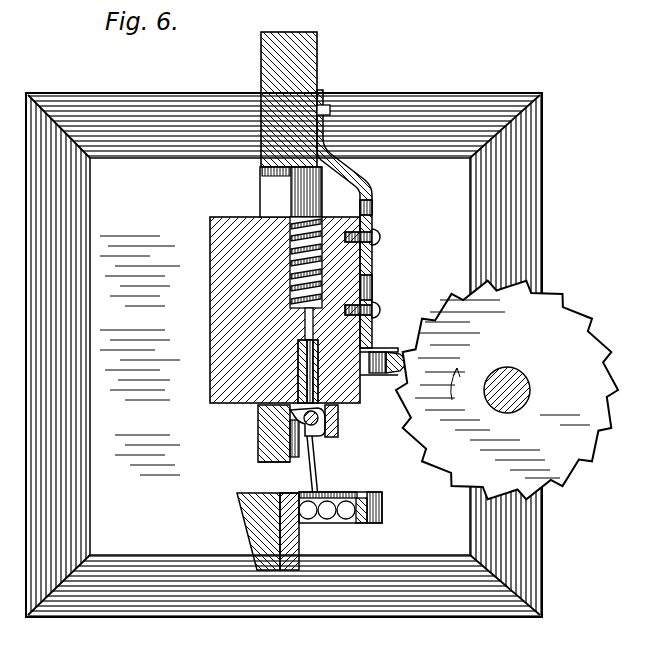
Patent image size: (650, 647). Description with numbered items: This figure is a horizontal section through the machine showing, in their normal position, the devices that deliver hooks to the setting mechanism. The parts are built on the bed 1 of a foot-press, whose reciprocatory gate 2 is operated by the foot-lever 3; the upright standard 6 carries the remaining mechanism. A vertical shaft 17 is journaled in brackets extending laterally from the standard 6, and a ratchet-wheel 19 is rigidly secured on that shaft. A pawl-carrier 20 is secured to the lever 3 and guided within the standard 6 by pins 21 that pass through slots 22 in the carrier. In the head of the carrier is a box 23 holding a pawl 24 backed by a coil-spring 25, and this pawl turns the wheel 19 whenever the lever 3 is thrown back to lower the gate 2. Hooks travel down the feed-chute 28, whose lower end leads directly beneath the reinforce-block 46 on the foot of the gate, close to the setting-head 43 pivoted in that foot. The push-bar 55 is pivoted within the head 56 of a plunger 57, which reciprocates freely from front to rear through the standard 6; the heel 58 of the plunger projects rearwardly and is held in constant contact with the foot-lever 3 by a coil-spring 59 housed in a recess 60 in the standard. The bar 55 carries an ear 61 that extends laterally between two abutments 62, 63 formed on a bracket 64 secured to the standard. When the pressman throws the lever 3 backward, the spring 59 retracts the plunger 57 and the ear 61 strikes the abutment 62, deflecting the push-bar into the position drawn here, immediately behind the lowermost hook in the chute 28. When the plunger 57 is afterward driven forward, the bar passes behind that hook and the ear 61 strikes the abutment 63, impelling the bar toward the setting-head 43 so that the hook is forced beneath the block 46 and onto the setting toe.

The bed 1 is at (205, 418).
The reciprocatory gate 2 is at (246, 506).
The foot-lever 3 is at (292, 82).
The standard 6 is at (214, 318).
The vertical shaft 17 is at (531, 388).
The ratchet-wheel 19 is at (507, 390).
The pawl-carrier 20 is at (373, 268).
The pins 21 is at (381, 237).
The slots 22 is at (373, 207).
The box 23 is at (378, 352).
The pawl 24 is at (390, 373).
The coil-spring 25 is at (372, 378).
The feed-chute 28 is at (383, 515).
The setting-head 43 is at (299, 540).
The reinforce-block 46 is at (285, 492).
The push-bar 55 is at (314, 470).
The head of plunger 56 is at (340, 434).
The plunger 57 is at (300, 188).
The heel of plunger 58 is at (320, 203).
The coil-spring 59 is at (300, 262).
The recess 60 is at (302, 288).
The ear 61 is at (303, 420).
The abutment 62 is at (290, 428).
The abutment 63 is at (283, 462).
The bracket 64 is at (262, 440).